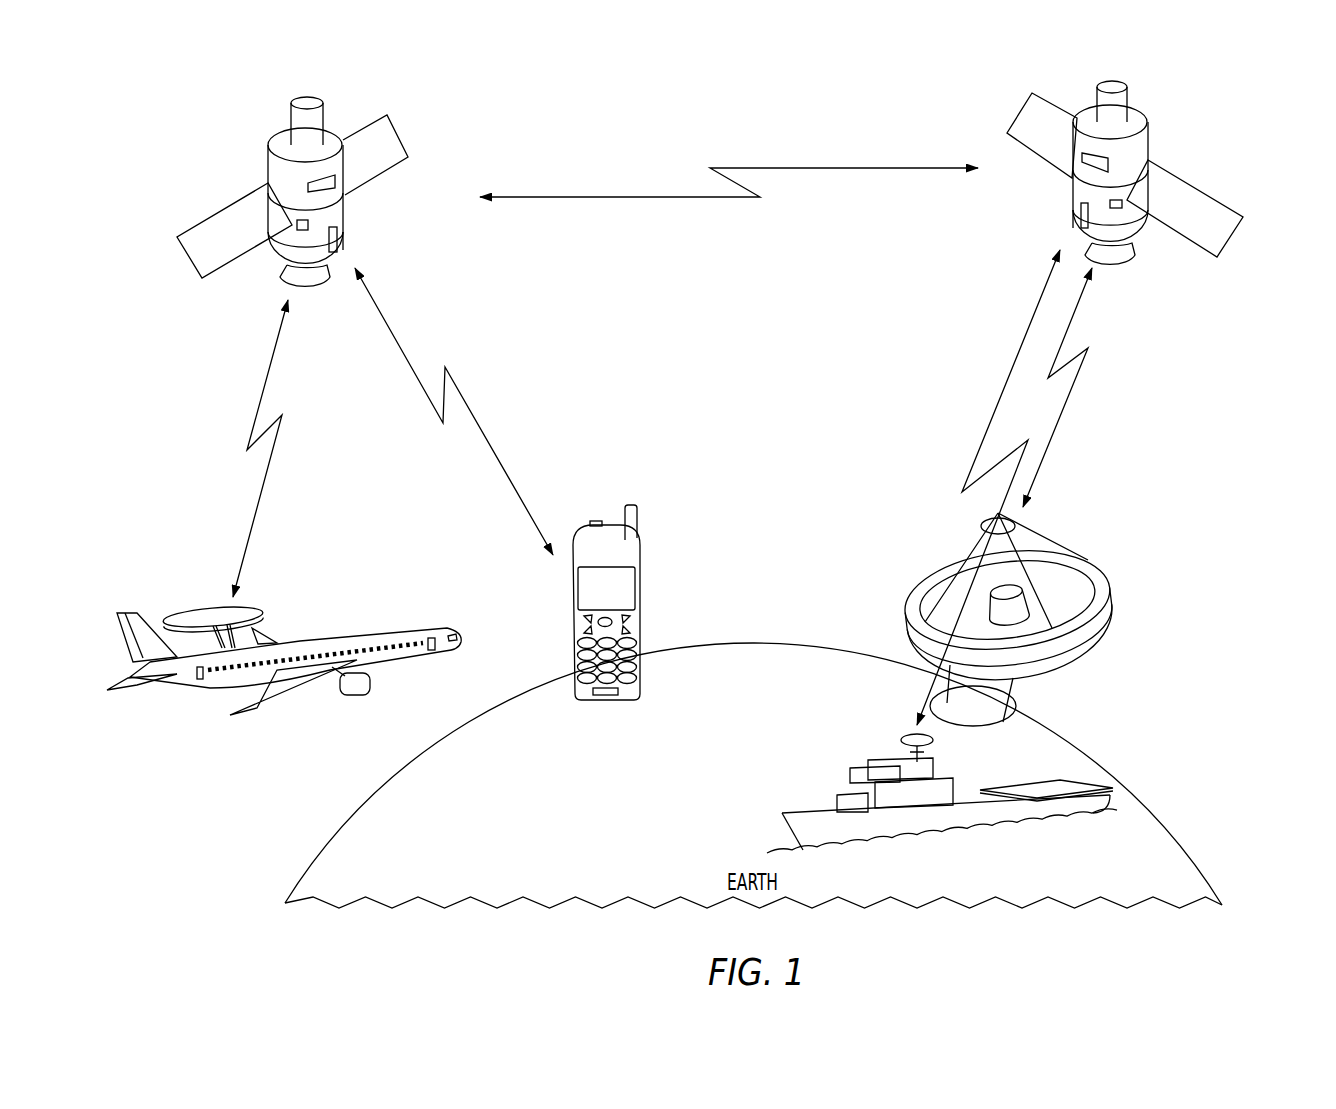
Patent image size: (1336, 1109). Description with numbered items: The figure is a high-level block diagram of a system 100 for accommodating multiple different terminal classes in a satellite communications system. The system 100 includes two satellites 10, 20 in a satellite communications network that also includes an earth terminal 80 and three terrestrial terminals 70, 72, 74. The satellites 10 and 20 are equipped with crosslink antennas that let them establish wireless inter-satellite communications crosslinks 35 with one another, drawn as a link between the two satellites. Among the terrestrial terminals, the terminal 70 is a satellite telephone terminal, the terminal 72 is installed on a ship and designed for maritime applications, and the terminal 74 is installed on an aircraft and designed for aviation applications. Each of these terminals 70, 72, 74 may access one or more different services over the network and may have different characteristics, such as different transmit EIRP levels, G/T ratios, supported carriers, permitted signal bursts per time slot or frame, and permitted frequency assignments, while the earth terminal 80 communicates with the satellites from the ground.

The system 100 is at (540, 114).
The satellite 10 is at (403, 137).
The satellite 20 is at (1240, 227).
The inter-satellite communications crosslinks 35 is at (790, 168).
The terminal 70 is at (640, 570).
The terminal 72 is at (907, 735).
The terminal 74 is at (197, 613).
The earth terminal 80 is at (972, 703).